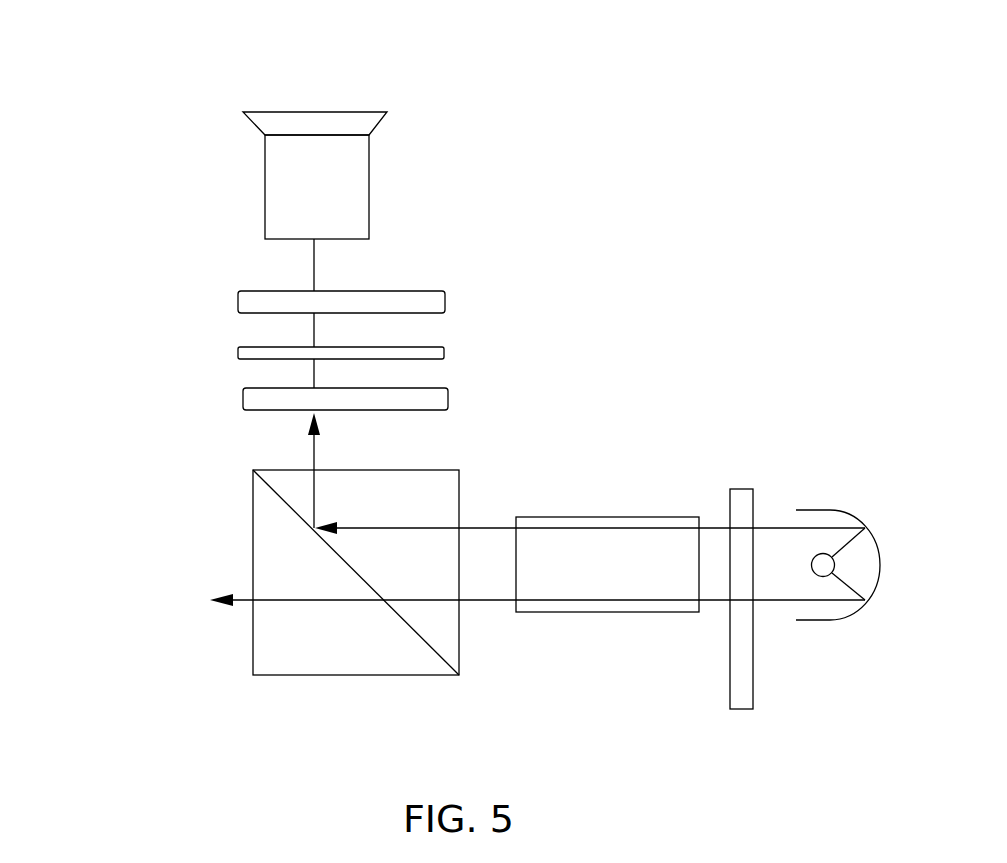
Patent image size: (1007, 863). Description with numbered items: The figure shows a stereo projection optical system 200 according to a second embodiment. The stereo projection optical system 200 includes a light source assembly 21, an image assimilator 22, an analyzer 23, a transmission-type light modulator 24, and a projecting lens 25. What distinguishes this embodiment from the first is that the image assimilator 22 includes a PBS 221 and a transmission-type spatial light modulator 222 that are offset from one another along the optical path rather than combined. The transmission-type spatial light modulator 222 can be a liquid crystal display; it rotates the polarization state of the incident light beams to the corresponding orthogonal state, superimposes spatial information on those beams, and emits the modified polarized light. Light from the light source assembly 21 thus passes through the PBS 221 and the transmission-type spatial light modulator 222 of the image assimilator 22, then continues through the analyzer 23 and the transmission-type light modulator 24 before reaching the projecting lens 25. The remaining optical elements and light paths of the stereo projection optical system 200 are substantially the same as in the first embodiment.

The stereo projection optical system 200 is at (622, 50).
The light source assembly 21 is at (709, 464).
The image assimilator 22 is at (102, 357).
The PBS 221 is at (253, 470).
The transmission-type spatial light modulator 222 is at (275, 400).
The analyzer 23 is at (442, 355).
The transmission-type light modulator 24 is at (255, 302).
The projecting lens 25 is at (394, 184).